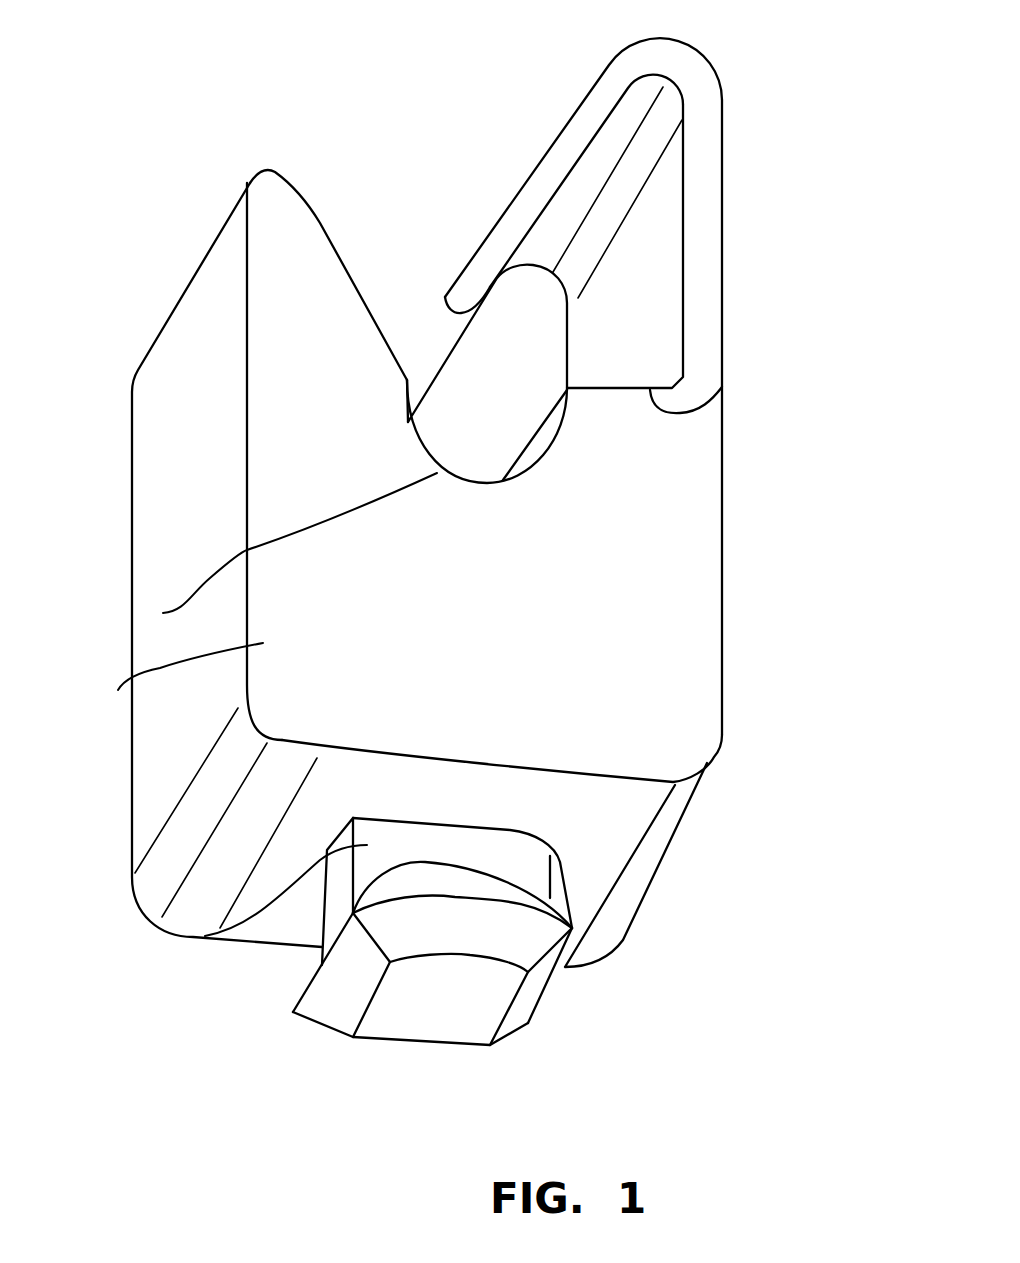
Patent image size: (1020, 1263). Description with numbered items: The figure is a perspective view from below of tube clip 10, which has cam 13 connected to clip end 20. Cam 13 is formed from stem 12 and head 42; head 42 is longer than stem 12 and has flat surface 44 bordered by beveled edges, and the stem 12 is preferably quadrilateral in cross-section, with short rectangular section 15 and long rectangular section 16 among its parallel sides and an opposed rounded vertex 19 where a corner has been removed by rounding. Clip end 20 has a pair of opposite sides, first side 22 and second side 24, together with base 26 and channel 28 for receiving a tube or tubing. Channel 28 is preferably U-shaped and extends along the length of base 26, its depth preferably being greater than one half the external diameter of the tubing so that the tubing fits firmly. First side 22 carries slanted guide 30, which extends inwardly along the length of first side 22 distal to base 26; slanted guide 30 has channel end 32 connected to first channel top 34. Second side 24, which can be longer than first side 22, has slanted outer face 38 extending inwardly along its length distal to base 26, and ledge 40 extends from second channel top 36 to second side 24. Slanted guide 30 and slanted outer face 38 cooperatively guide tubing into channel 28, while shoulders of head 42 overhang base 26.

The tube clip 10 is at (799, 131).
The stem 12 is at (510, 848).
The cam 13 is at (418, 843).
The short rectangular section 15 is at (193, 937).
The long rectangular section 16 is at (333, 905).
The rounded vertex 19 is at (555, 882).
The clip end 20 is at (682, 513).
The first side 22 is at (162, 417).
The second side 24 is at (712, 270).
The base 26 is at (118, 690).
The channel 28 is at (163, 613).
The slanted guide 30 is at (320, 223).
The channel end 32 is at (407, 380).
The first channel top 34 is at (407, 383).
The second channel top 36 is at (547, 413).
The slanted outer face 38 is at (507, 202).
The ledge 40 is at (722, 387).
The head 42 is at (443, 1030).
The flat surface 44 is at (390, 1030).